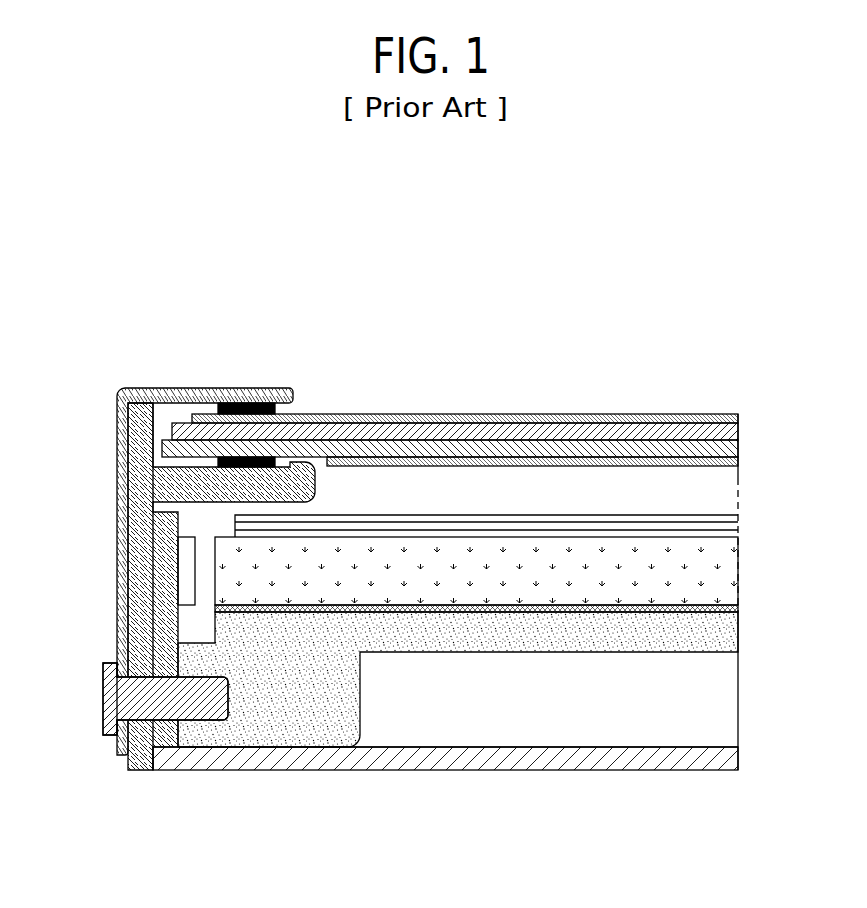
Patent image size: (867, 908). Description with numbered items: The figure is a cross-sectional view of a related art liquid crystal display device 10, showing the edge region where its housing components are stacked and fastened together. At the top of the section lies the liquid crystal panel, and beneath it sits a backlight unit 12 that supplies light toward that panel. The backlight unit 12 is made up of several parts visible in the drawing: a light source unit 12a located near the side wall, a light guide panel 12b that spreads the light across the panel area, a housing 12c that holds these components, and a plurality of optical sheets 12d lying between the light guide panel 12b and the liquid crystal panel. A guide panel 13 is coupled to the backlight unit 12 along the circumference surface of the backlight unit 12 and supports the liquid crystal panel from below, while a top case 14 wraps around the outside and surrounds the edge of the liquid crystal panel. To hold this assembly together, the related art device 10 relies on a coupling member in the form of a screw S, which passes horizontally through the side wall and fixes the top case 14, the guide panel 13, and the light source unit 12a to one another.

The liquid crystal display device 10 is at (212, 306).
The backlight unit 12 is at (458, 692).
The light source unit 12a is at (187, 567).
The light guide panel 12b is at (388, 578).
The housing 12c is at (312, 706).
The optical sheets 12d is at (467, 542).
The guide panel 13 is at (143, 526).
The top case 14 is at (122, 452).
The screw S is at (130, 702).